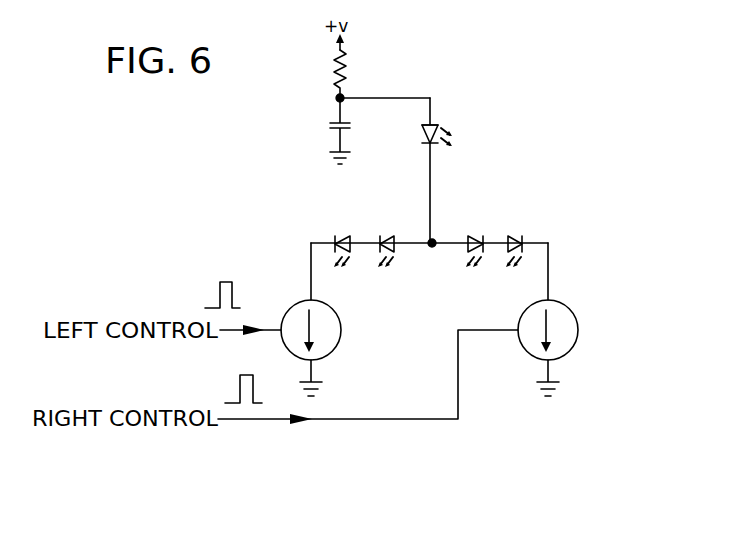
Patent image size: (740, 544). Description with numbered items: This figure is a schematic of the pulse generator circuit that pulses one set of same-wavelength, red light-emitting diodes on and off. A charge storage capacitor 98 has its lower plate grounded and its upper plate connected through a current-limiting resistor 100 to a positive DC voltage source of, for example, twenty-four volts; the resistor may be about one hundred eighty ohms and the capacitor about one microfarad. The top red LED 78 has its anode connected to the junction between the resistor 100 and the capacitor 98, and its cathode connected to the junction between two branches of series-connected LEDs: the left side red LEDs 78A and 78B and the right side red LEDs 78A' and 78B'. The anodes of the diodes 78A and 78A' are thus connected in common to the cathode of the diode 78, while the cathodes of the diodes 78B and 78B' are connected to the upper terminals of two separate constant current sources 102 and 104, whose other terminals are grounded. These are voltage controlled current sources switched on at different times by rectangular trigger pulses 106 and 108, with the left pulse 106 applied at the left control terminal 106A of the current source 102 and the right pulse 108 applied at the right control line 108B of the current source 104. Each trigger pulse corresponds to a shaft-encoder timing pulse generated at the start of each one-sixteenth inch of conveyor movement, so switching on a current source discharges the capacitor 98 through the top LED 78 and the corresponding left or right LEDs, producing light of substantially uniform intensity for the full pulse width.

The top red LED 78 is at (438, 121).
The left side red LED 78A is at (383, 217).
The left side red LED 78B is at (331, 221).
The right side red LED 78A' is at (488, 228).
The right side red LED 78B' is at (544, 229).
The charge storage capacitor 98 is at (378, 108).
The current-limiting resistor 100 is at (345, 74).
The constant current source 102 is at (338, 313).
The constant current source 104 is at (572, 310).
The rectangular trigger pulse 106 is at (214, 296).
The left control terminal 106A is at (266, 328).
The rectangular trigger pulse 108 is at (226, 390).
The right control input line 108B is at (368, 418).